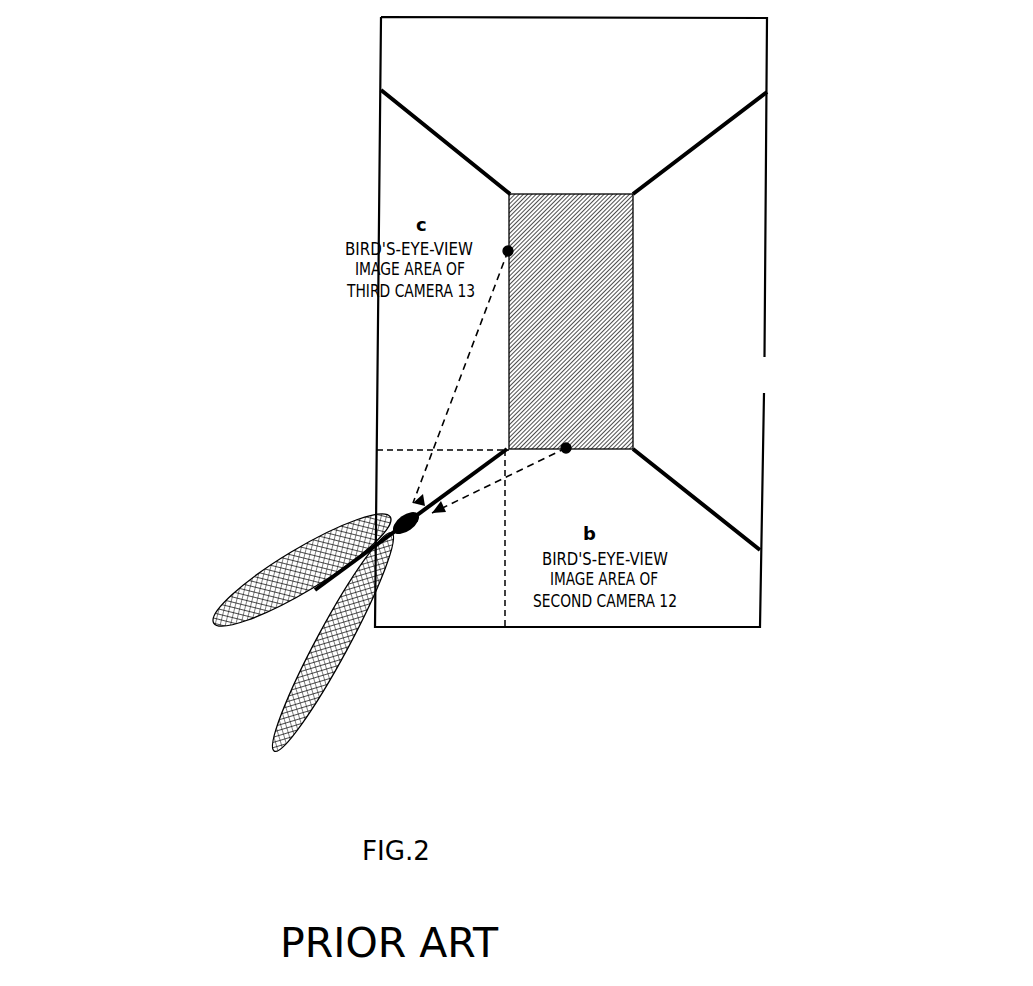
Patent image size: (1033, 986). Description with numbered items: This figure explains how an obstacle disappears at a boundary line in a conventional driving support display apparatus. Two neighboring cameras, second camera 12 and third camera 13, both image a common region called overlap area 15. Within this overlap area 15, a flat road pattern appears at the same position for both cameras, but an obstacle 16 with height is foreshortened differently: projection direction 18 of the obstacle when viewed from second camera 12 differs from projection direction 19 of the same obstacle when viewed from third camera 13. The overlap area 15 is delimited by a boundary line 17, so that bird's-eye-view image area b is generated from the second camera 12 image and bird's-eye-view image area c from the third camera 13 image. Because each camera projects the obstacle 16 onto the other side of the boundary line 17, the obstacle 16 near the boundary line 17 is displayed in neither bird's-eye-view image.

The second camera 12 is at (568, 446).
The third camera 13 is at (509, 248).
The overlap area 15 is at (457, 590).
The obstacle 16 is at (403, 512).
The boundary line 17 is at (310, 600).
The projection direction of second camera 18 is at (343, 538).
The projection direction of third camera 19 is at (338, 657).